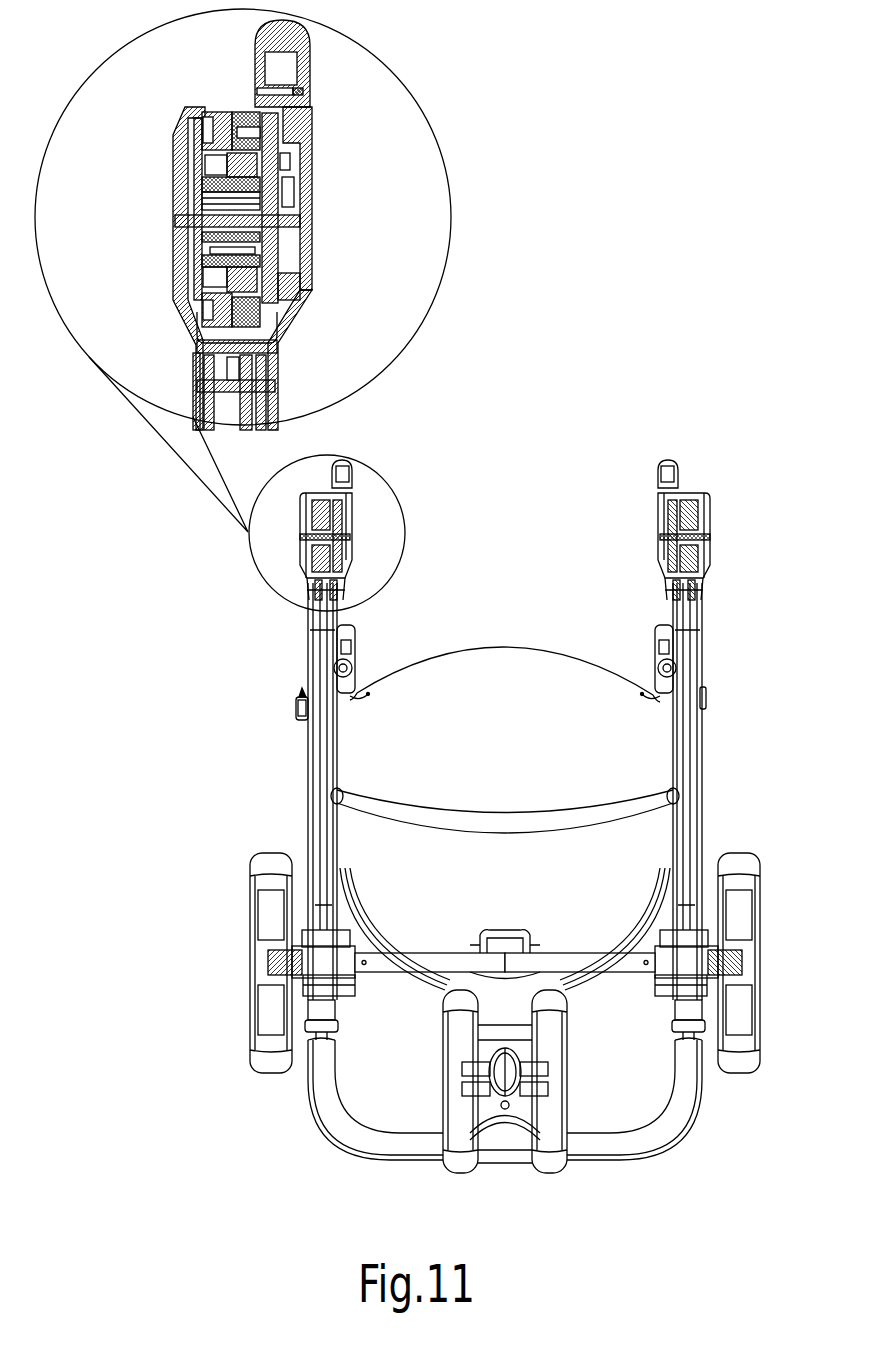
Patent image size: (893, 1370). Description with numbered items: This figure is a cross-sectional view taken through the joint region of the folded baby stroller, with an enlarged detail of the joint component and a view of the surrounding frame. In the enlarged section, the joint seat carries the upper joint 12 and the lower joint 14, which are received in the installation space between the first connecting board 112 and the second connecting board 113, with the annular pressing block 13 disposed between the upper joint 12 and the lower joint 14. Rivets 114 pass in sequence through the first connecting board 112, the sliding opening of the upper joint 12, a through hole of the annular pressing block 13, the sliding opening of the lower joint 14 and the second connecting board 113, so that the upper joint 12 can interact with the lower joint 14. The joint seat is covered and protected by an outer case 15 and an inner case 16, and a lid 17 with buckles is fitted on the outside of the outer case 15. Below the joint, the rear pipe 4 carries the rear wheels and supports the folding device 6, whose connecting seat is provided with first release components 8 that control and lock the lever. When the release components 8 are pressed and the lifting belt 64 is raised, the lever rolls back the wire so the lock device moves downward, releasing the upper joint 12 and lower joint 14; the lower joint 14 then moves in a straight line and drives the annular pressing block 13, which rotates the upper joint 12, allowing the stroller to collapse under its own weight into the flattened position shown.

The rear pipe 4 is at (312, 773).
The folding device 6 is at (362, 660).
The first release components 8 is at (296, 693).
The lifting belt 64 is at (519, 648).
The upper joint 12 is at (268, 257).
The annular pressing block 13 is at (297, 292).
The lower joint 14 is at (182, 223).
The outer case 15 is at (180, 158).
The inner case 16 is at (308, 140).
The lid 17 is at (178, 173).
The first connecting board 112 is at (270, 178).
The second connecting board 113 is at (180, 268).
The rivets 114 is at (303, 203).